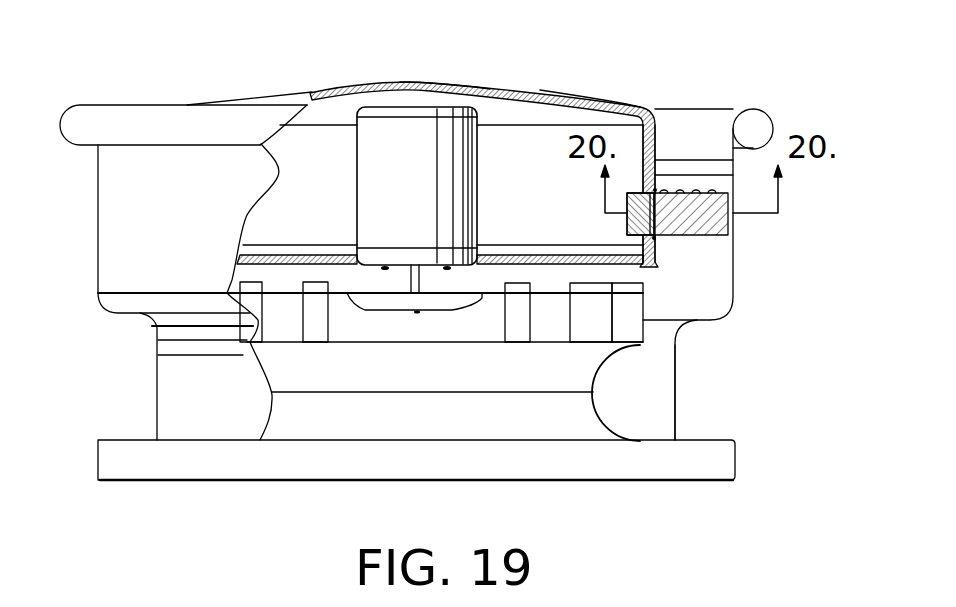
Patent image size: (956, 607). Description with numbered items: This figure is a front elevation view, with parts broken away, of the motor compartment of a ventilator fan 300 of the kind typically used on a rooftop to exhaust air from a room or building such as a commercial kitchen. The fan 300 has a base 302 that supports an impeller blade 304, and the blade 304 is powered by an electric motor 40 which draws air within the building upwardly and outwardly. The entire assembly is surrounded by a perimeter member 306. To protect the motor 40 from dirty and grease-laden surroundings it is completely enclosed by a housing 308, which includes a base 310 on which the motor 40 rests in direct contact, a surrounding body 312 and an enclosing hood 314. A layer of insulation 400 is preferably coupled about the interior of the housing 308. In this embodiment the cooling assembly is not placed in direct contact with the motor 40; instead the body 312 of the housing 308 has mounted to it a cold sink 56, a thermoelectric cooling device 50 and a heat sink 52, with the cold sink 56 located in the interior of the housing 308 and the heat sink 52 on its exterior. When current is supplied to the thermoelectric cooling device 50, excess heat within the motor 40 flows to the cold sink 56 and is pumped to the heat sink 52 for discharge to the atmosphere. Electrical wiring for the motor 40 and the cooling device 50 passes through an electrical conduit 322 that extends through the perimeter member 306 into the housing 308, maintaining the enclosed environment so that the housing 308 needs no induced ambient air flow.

The electric motor 40 is at (402, 108).
The layer of insulation 400 is at (435, 89).
The enclosing hood 314 is at (493, 90).
The housing 308 is at (576, 97).
The cold sink 56 is at (629, 192).
The surrounding body 312 is at (663, 128).
The electrical conduit 322 is at (704, 161).
The heat sink 52 is at (716, 227).
The thermoelectric cooling device 50 is at (657, 254).
The ventilator fan 300 is at (745, 297).
The base 310 is at (643, 265).
The perimeter member 306 is at (680, 333).
The impeller blade 304 is at (328, 328).
The base 302 is at (522, 442).